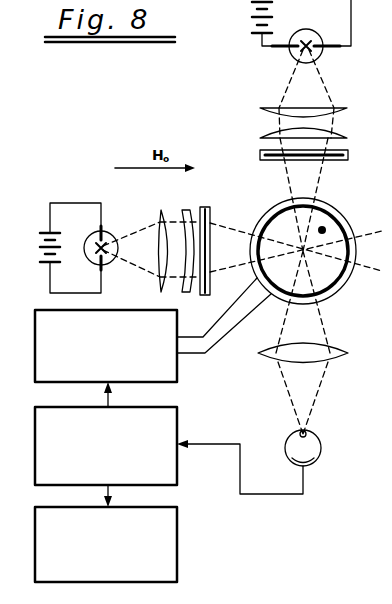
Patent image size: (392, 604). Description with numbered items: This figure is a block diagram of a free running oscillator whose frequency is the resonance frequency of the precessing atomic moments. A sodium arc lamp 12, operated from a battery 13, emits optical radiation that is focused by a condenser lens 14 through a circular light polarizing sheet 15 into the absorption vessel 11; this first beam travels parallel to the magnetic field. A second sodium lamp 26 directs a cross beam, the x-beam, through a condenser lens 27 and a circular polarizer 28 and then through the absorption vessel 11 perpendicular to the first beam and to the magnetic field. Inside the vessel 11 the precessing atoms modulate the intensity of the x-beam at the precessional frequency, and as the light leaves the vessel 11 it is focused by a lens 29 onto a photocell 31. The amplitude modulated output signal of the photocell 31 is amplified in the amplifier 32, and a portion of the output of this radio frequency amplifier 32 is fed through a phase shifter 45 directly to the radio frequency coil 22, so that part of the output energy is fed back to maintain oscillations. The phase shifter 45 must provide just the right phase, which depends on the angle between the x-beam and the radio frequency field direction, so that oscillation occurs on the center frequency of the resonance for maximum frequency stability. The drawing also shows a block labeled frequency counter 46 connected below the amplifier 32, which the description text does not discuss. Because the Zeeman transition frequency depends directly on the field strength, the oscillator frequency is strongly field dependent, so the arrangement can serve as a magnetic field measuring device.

The absorption vessel 11 is at (336, 236).
The sodium arc lamp 12 is at (106, 238).
The battery 13 is at (36, 240).
The condenser lens 14 is at (186, 215).
The circular light polarizing sheet 15 is at (208, 215).
The radio frequency coil 22 is at (334, 203).
The second sodium lamp 26 is at (298, 56).
The condenser lens 27 is at (273, 128).
The circular polarizer 28 is at (261, 155).
The lens 29 is at (336, 361).
The photocell 31 is at (316, 446).
The amplifier 32 is at (170, 430).
The phase shifter 45 is at (170, 366).
The frequency counter 46 is at (170, 545).